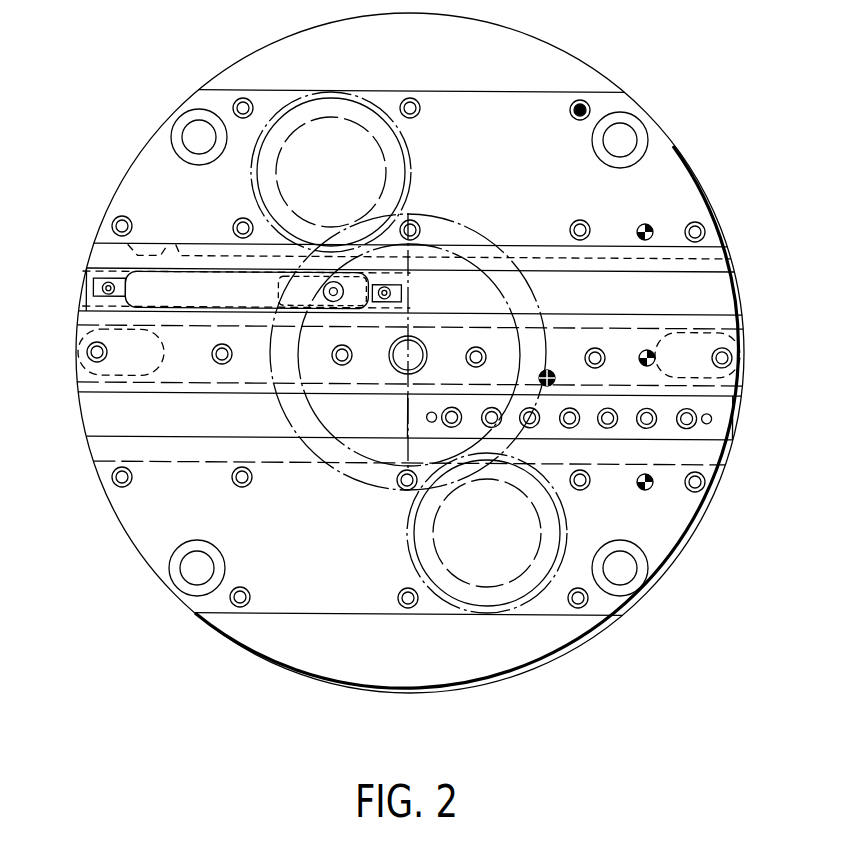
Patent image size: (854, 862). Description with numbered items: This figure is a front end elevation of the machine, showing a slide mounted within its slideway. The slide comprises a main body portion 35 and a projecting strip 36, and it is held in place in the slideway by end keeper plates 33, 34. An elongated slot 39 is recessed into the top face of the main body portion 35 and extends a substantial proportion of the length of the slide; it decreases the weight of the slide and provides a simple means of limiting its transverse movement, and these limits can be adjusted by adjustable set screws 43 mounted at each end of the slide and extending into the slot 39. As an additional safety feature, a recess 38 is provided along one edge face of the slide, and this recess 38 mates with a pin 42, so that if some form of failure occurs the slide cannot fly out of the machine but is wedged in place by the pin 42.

The end keeper plate 33 is at (660, 161).
The end keeper plate 34 is at (733, 323).
The main body portion 35 is at (115, 253).
The projecting strip 36 is at (720, 420).
The recess 38 is at (750, 366).
The elongated slot 39 is at (77, 319).
The pin 42 is at (547, 378).
The adjustable set screw 43 is at (97, 284).